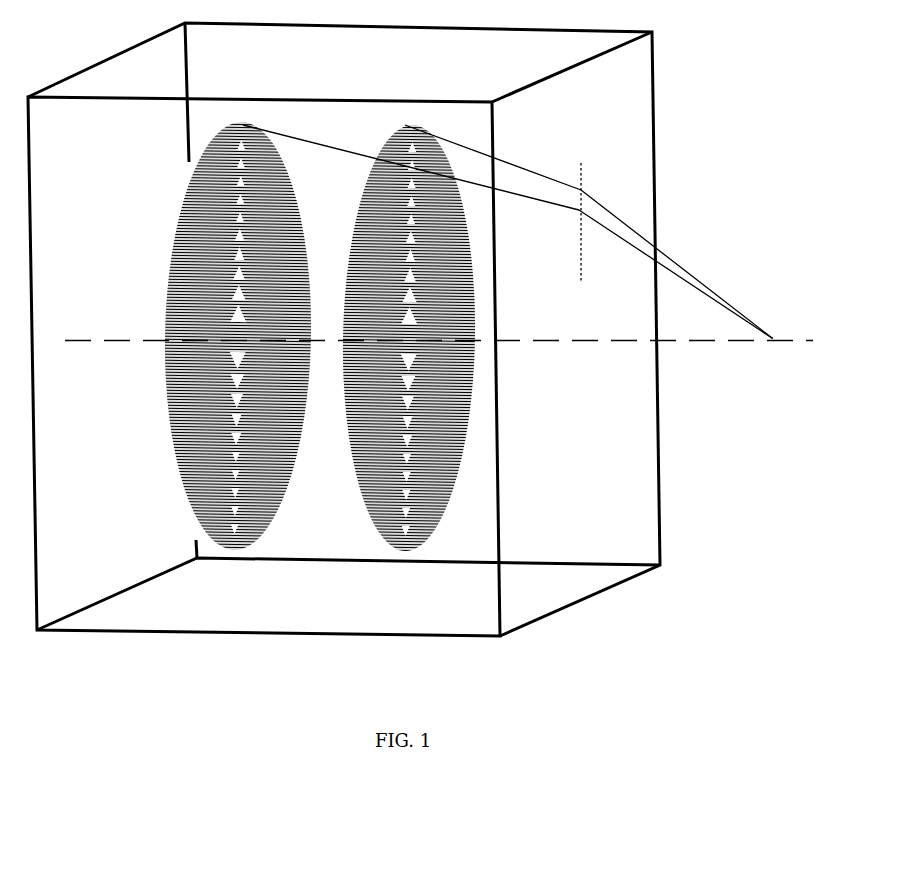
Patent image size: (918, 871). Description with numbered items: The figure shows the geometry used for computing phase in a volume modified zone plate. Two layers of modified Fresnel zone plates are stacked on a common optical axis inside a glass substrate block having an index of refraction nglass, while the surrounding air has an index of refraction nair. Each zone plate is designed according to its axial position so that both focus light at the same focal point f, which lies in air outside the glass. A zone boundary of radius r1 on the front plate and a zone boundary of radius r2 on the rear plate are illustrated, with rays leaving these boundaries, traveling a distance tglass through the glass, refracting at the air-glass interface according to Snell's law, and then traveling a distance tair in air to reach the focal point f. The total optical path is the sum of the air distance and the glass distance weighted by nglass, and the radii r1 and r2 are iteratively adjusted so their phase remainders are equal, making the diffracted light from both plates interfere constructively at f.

The zone boundary radius r2 is at (240, 336).
The zone boundary radius r1 is at (411, 338).
The propagation distance in glass tglass is at (417, 192).
The propagation distance in air tair is at (675, 264).
The focal point f is at (776, 367).
The index of refraction of glass nglass is at (344, 329).
The index of refraction of air nair is at (720, 589).